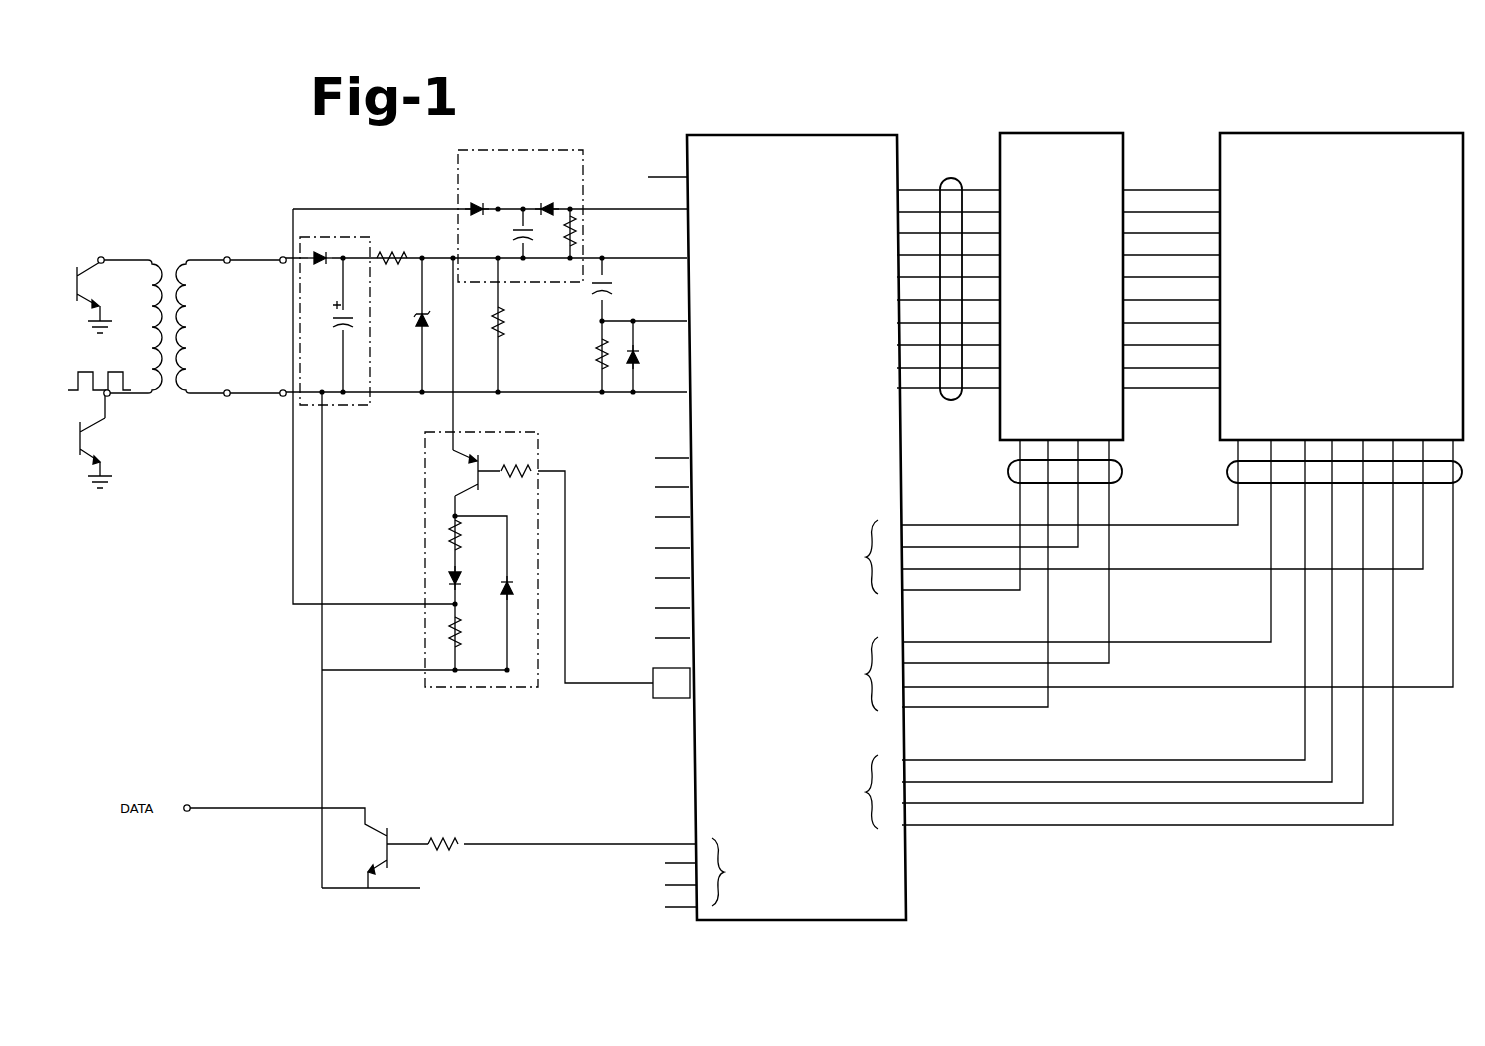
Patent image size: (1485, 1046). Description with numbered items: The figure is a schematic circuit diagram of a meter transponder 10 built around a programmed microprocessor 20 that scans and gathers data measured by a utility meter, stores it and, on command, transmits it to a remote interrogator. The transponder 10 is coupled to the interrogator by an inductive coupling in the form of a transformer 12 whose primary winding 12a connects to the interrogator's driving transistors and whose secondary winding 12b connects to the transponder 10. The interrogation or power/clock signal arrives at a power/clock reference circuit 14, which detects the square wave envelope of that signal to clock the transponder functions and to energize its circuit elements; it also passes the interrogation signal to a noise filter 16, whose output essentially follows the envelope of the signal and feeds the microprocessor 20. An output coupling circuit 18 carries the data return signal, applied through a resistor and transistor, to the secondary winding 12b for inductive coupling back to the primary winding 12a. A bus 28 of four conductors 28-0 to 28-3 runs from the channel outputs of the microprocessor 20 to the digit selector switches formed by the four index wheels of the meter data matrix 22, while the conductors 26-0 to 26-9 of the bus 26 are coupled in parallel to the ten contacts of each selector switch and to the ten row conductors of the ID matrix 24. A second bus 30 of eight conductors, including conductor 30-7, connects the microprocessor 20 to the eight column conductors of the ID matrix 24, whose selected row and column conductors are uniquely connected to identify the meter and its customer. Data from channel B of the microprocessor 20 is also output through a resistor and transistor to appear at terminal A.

The meter transponder 10 is at (1468, 109).
The transformer 12 is at (172, 404).
The primary winding 12a is at (146, 302).
The secondary winding 12b is at (200, 299).
The power/clock reference circuit 14 is at (296, 402).
The noise filter circuit 16 is at (560, 150).
The output coupling circuit 18 is at (540, 462).
The microprocessor 20 is at (814, 134).
The meter data matrix 22 is at (1068, 133).
The ID matrix 24 is at (1327, 133).
The bus 26 is at (947, 180).
The conductor 26-9 is at (985, 188).
The conductor 26-0 is at (972, 390).
The bus 28 is at (1124, 473).
The conductor 28-3 is at (1018, 456).
The conductor 28-0 is at (1112, 460).
The second bus 30 is at (1462, 490).
The conductor 30-7 is at (1236, 454).
The terminal A is at (440, 839).